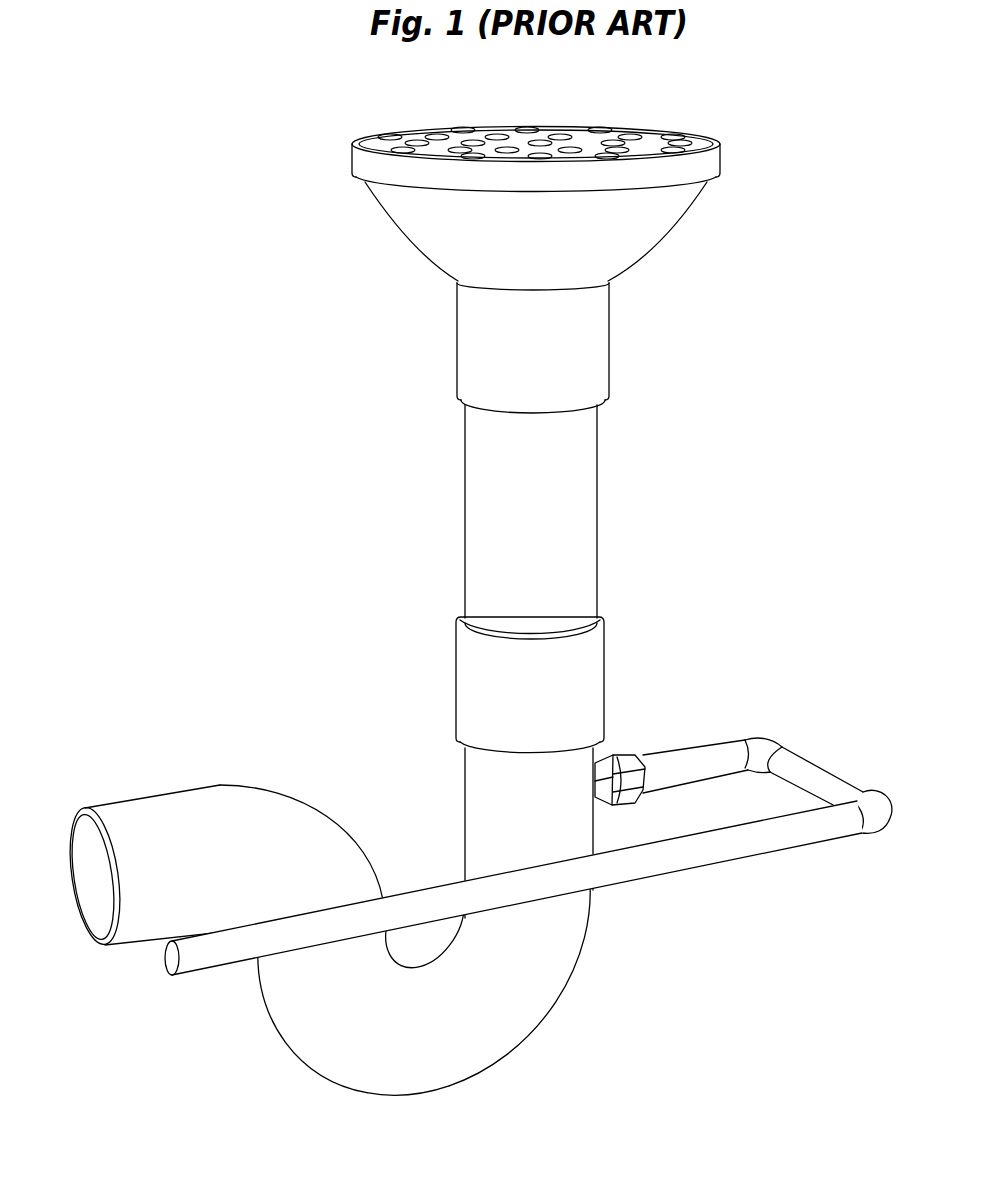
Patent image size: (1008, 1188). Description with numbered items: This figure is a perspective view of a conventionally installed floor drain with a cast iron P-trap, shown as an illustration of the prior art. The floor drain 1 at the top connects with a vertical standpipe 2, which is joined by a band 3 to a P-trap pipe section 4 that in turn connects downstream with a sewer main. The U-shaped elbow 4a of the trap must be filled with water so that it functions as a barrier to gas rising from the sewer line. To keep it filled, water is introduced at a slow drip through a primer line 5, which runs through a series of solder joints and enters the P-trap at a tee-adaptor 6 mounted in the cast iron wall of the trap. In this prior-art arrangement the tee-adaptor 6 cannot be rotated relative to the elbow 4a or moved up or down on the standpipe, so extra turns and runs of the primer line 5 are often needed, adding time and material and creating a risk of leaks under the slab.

The floor drain 1 is at (399, 261).
The vertical standpipe 2 is at (587, 512).
The band 3 is at (588, 668).
The P-trap pipe section 4 is at (570, 957).
The U-shaped elbow 4a is at (425, 1097).
The primer line 5 is at (757, 847).
The tee-adaptor 6 is at (625, 752).